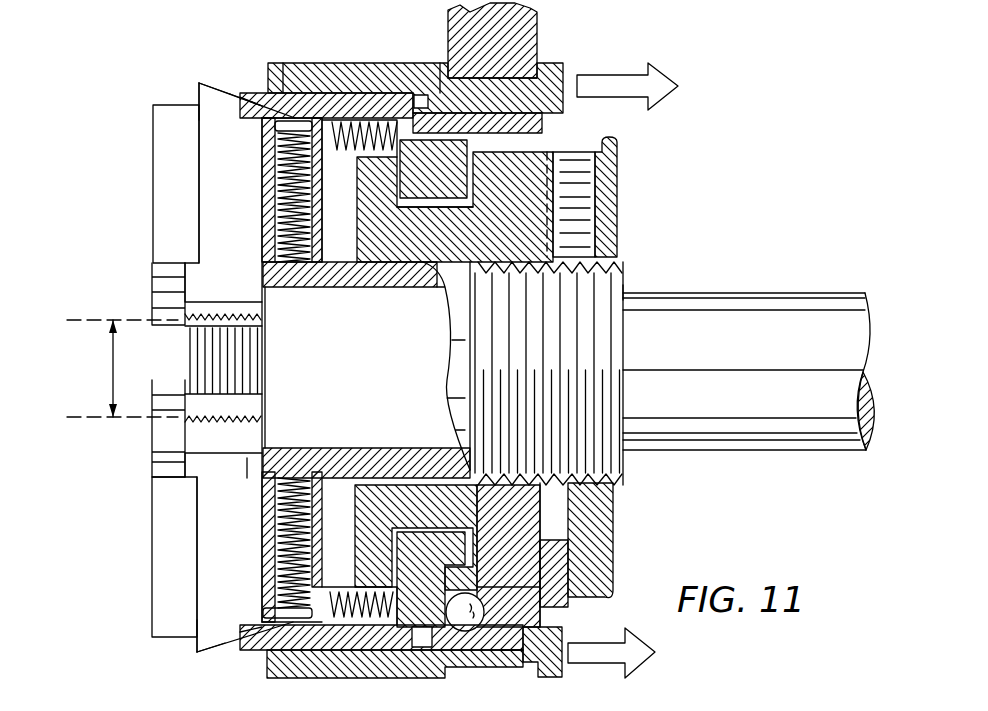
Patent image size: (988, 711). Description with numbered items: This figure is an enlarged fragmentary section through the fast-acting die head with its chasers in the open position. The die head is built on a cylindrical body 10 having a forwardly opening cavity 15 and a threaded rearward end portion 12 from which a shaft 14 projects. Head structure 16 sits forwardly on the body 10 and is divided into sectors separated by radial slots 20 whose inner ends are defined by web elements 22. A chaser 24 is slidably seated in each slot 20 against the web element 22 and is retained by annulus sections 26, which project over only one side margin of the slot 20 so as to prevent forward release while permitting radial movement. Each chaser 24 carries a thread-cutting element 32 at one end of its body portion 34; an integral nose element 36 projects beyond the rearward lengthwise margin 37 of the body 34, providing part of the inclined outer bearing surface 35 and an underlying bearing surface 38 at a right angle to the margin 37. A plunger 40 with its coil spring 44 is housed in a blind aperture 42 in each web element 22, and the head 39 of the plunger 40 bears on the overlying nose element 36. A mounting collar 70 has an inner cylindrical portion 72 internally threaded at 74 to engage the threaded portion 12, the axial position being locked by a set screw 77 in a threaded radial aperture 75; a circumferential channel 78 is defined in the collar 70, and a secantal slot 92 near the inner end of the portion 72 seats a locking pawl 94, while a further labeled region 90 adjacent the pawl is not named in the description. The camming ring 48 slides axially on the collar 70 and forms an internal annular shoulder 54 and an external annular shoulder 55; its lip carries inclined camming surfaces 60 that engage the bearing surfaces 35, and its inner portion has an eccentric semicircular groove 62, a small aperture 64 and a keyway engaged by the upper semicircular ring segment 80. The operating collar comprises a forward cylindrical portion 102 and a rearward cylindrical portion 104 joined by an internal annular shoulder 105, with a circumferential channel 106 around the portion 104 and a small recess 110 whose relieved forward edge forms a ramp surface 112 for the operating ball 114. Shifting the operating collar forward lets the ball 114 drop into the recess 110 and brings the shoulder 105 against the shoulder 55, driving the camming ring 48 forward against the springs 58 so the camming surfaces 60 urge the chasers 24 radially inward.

The cylindrical body 10 is at (632, 282).
The threaded rearward end portion 12 is at (577, 352).
The shaft 14 is at (813, 308).
The forwardly opening cavity 15 is at (409, 305).
The head structure 16 is at (250, 513).
The radial slots 20 is at (262, 272).
The web elements 22 is at (305, 371).
The chaser 24 is at (194, 85).
The annulus sections 26 is at (168, 195).
The thread-cutting element 32 is at (242, 365).
The body portion 34 is at (212, 128).
The inclined outer bearing surface 35 is at (198, 82).
The nose element 36 is at (220, 113).
The rearward lengthwise margin 37 is at (266, 155).
The underlying bearing surface 38 is at (285, 100).
The plunger head 39 is at (268, 610).
The plunger 40 is at (280, 580).
The blind aperture 42 is at (277, 233).
The coil spring 44 is at (280, 218).
The camming ring 48 is at (391, 82).
The internal annular shoulder 54 is at (390, 574).
The external annular shoulder 55 is at (420, 96).
The springs 58 is at (353, 112).
The inclined camming surfaces 60 is at (236, 114).
The semicircular groove 62 is at (442, 576).
The small aperture 64 is at (546, 612).
The mounting collar 70 is at (623, 182).
The inner cylindrical portion 72 is at (610, 210).
The internal thread 74 is at (621, 276).
The threaded radial aperture 75 is at (623, 182).
The set screw 77 is at (575, 162).
The circumferential channel 78 is at (472, 208).
The upper semicircular ring segment 80 is at (462, 170).
The detent housing 90 is at (492, 556).
The secantal slot 92 is at (576, 510).
The locking pawl 94 is at (576, 556).
The forward cylindrical portion 102 is at (415, 56).
The rearward cylindrical portion 104 is at (562, 668).
The internal annular shoulder 105 is at (470, 58).
The circumferential channel 106 is at (445, 676).
The small recess 110 is at (512, 642).
The ramp surface 112 is at (510, 643).
The operating ball 114 is at (483, 597).